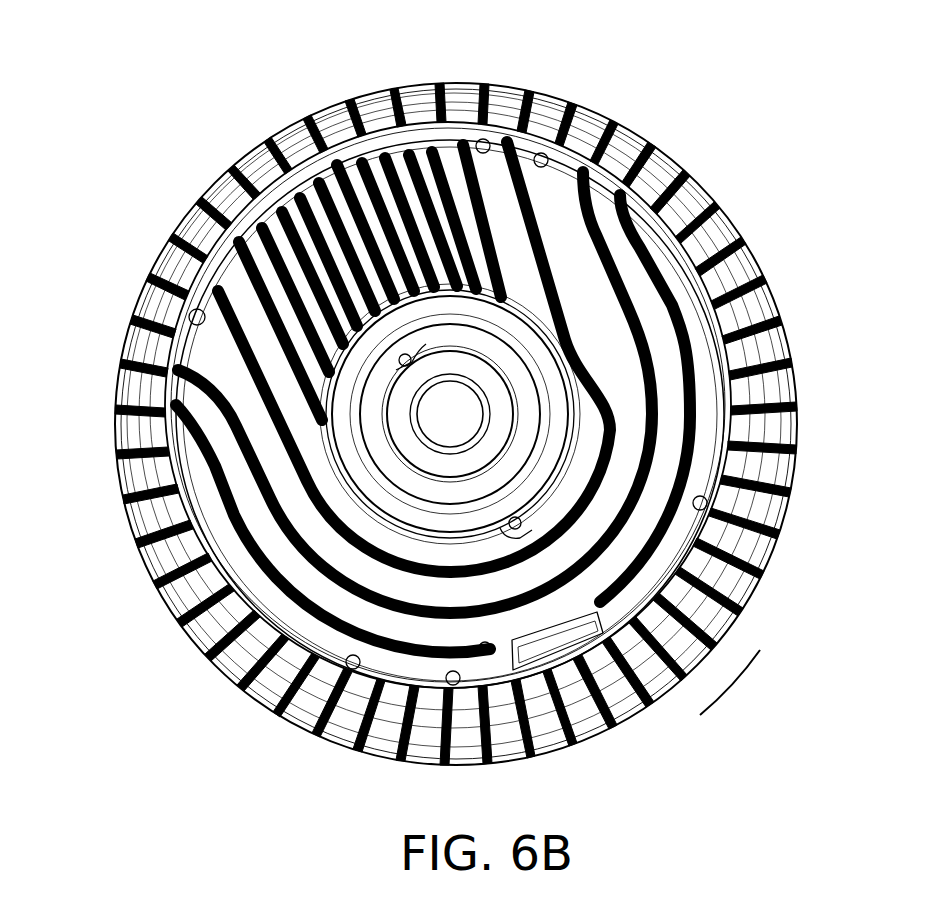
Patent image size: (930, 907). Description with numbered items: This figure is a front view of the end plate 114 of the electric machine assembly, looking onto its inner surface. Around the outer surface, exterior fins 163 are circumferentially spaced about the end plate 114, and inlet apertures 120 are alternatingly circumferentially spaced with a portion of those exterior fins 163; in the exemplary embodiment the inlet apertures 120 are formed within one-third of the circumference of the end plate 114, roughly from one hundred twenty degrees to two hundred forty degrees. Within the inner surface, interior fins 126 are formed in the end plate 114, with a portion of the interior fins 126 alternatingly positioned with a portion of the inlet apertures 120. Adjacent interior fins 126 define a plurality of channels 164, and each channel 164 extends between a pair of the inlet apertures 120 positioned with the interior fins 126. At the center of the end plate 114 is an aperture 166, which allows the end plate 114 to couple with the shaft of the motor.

The end plate 114 is at (669, 674).
The inlet apertures 120 is at (380, 140).
The interior fins 126 is at (662, 270).
The exterior fins 163 is at (727, 634).
The channel 164 is at (202, 351).
The aperture 166 is at (417, 393).